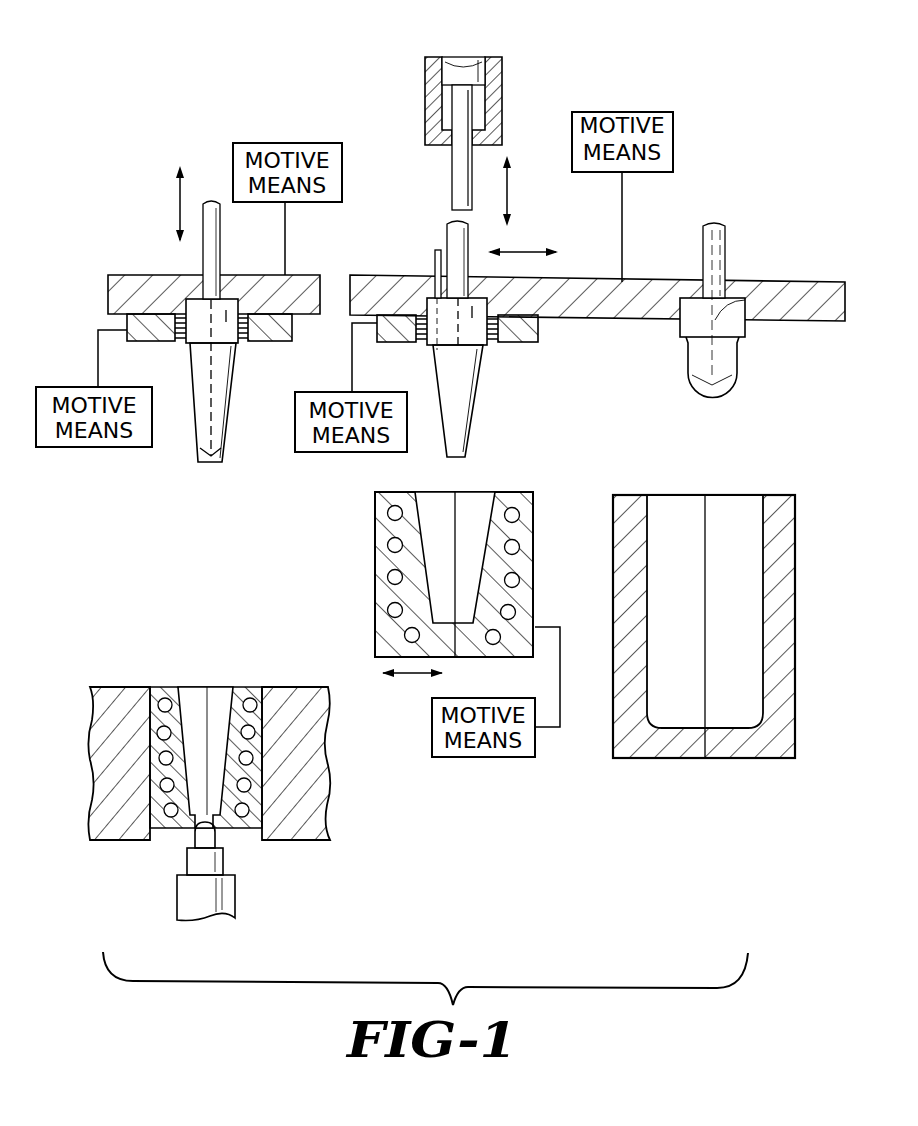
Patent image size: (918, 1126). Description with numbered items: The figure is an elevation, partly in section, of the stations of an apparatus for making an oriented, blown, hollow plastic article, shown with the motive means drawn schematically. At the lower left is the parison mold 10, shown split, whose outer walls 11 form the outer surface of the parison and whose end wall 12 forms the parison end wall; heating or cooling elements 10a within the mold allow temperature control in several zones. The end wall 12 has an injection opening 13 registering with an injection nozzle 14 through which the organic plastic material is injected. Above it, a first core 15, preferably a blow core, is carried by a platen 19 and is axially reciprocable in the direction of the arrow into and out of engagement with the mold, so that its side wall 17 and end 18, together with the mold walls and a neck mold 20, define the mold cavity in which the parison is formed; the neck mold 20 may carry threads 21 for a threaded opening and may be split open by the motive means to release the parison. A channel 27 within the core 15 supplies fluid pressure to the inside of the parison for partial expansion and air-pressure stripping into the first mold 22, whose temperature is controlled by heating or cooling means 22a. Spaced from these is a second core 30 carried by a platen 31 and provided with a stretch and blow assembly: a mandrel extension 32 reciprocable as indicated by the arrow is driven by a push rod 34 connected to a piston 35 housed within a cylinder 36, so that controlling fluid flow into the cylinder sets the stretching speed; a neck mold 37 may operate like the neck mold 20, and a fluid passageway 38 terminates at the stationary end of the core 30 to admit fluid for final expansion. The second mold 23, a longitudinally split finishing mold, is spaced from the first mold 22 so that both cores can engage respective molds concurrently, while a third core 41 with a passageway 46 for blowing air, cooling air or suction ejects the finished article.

The parison mold 10 is at (227, 740).
The heating or cooling elements 10a is at (160, 757).
The outer walls 11 is at (207, 690).
The end wall 12 is at (190, 828).
The injection opening 13 is at (217, 826).
The injection nozzle 14 is at (188, 900).
The first core 15 is at (199, 412).
The side wall 17 is at (228, 425).
The end 18 is at (211, 464).
The platen 19 is at (140, 275).
The neck mold 20 is at (277, 342).
The threads 21 is at (188, 342).
The first mold 22 is at (421, 574).
The heating or cooling means 22a is at (380, 568).
The second mold 23 is at (785, 716).
The channel 27 is at (217, 238).
The second core 30 is at (460, 413).
The platen 31 is at (380, 288).
The mandrel extension 32 is at (447, 225).
The push rod 34 is at (456, 160).
The piston 35 is at (459, 70).
The cylinder 36 is at (433, 90).
The neck mold 37 is at (538, 342).
The fluid passageway 38 is at (436, 252).
The third core 41 is at (725, 366).
The passageway 46 is at (740, 300).